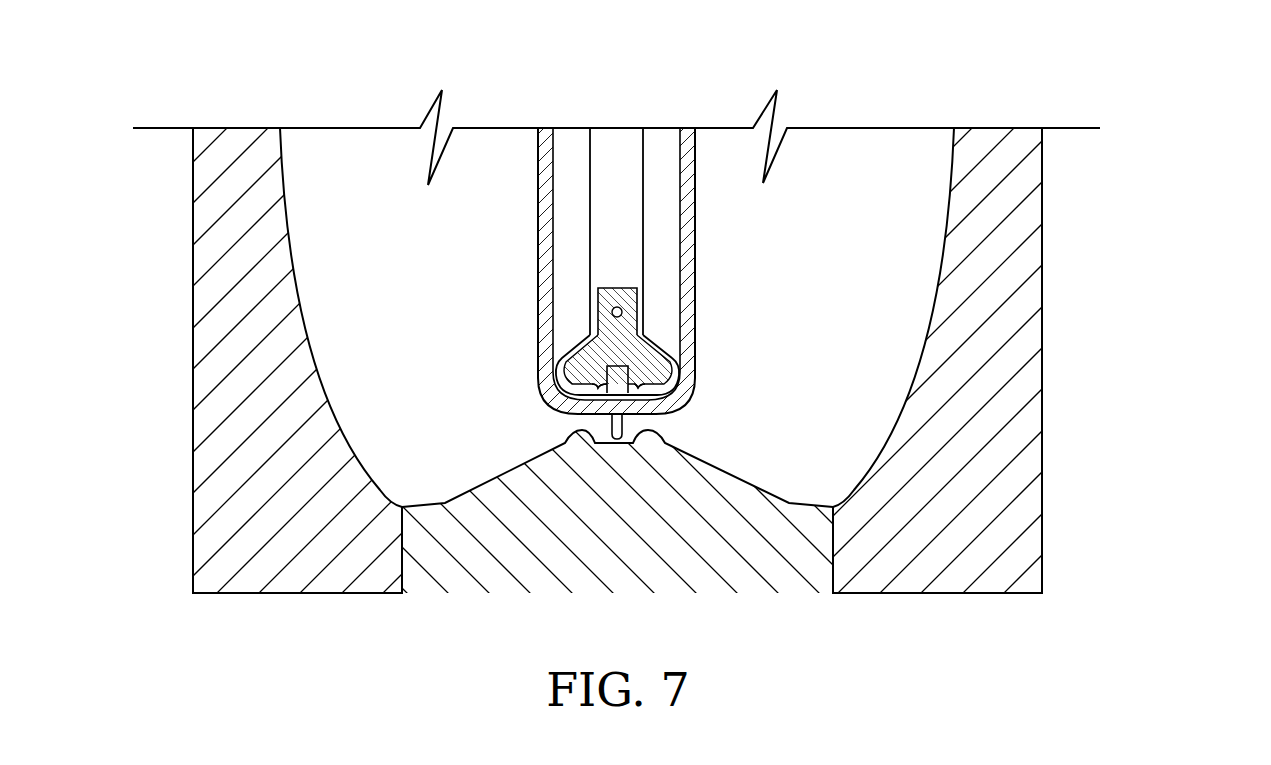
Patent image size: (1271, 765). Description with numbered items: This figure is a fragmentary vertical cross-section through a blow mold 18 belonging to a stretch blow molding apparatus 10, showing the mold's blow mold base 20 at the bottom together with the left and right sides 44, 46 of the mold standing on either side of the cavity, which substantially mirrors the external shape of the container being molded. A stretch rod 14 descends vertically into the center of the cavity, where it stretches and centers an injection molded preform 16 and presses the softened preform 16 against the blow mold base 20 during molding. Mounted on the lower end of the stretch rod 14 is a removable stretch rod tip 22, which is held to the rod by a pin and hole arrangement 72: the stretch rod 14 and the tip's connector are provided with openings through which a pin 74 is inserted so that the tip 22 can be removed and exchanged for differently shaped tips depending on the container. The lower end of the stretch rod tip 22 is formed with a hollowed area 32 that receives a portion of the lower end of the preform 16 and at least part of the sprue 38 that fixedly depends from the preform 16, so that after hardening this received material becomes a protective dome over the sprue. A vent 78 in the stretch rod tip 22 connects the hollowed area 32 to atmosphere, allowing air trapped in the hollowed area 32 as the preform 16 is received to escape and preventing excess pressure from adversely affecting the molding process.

The apparatus 10 is at (1147, 143).
The stretch rod 14 is at (625, 143).
The preform 16 is at (690, 222).
The blow mold 18 is at (398, 193).
The blow mold base 20 is at (665, 577).
The stretch rod tip 22 is at (582, 355).
The hollowed area 32 is at (630, 372).
The sprue 38 is at (617, 418).
The left side 44 is at (213, 213).
The right side 46 is at (1020, 219).
The pin and hole arrangement 72 is at (633, 297).
The pin 74 is at (611, 313).
The vent 78 is at (622, 375).